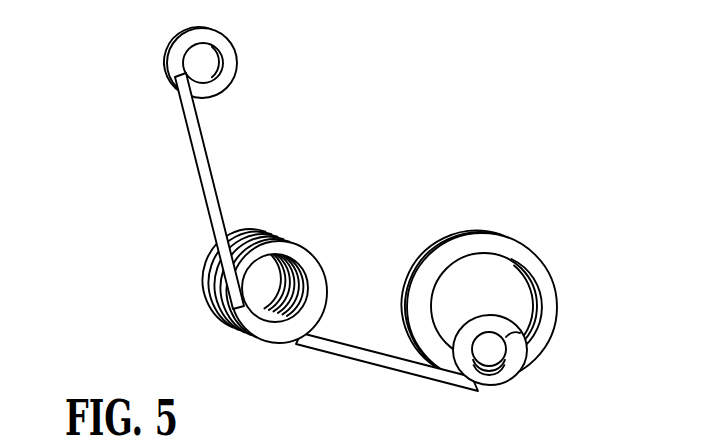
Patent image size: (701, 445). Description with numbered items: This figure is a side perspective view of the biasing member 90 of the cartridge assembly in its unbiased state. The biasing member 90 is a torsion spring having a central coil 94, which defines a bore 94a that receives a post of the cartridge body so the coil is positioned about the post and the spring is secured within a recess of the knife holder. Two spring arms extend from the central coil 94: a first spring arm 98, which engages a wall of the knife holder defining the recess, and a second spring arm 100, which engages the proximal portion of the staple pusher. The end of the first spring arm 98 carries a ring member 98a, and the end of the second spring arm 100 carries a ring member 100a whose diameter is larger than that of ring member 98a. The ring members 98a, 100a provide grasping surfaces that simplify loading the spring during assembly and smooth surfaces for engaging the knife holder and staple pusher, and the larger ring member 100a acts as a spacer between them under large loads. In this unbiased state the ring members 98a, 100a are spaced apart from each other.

The biasing member 90 is at (321, 215).
The central coil 94 is at (283, 247).
The bore 94a is at (261, 293).
The first spring arm 98 is at (190, 129).
The ring member 98a is at (228, 47).
The second spring arm 100 is at (367, 352).
The ring member 100a is at (523, 257).